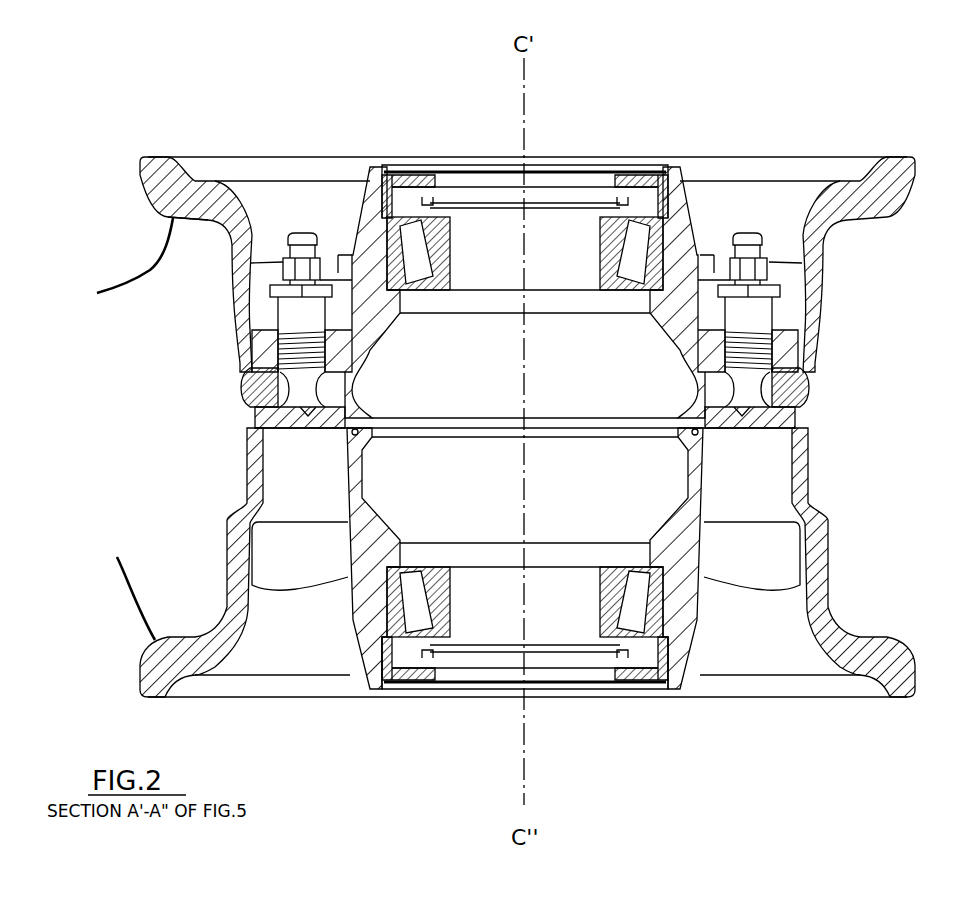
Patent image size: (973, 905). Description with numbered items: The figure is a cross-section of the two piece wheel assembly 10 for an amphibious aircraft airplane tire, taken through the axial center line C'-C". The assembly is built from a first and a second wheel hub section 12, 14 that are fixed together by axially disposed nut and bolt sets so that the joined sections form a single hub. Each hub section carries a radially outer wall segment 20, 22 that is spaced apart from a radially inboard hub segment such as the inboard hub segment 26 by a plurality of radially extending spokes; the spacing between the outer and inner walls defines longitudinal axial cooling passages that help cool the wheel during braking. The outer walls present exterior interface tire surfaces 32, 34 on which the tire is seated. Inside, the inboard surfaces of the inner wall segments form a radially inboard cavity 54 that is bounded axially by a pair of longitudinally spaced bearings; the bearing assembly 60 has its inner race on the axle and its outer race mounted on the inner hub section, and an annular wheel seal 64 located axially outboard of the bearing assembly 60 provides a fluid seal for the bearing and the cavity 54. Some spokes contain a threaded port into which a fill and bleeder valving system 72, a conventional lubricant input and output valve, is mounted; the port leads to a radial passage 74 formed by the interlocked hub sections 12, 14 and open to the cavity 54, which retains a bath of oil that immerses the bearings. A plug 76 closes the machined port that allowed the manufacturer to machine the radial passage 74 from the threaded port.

The two piece wheel assembly 10 is at (884, 135).
The first wheel hub section 12 is at (140, 173).
The second wheel hub section 14 is at (140, 672).
The radially outer wall segment 20 is at (165, 218).
The radially outer wall segment 22 is at (150, 650).
The radially inboard hub segment 26 is at (352, 648).
The exterior interface tire surface 32 is at (120, 261).
The exterior interface tire surface 34 is at (125, 589).
The radially inboard cavity 54 is at (477, 388).
The bearing assembly 60 is at (591, 612).
The annular wheel seal 64 is at (452, 682).
The fill and bleeder valving system 72 is at (292, 234).
The radial passage 74 is at (257, 427).
The plug 76 is at (238, 388).